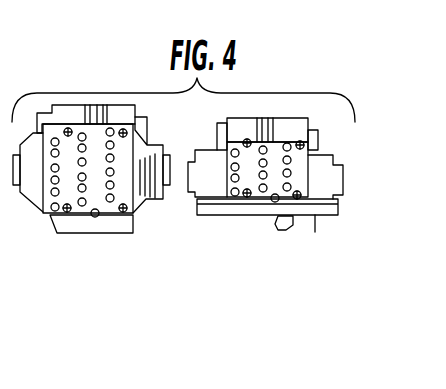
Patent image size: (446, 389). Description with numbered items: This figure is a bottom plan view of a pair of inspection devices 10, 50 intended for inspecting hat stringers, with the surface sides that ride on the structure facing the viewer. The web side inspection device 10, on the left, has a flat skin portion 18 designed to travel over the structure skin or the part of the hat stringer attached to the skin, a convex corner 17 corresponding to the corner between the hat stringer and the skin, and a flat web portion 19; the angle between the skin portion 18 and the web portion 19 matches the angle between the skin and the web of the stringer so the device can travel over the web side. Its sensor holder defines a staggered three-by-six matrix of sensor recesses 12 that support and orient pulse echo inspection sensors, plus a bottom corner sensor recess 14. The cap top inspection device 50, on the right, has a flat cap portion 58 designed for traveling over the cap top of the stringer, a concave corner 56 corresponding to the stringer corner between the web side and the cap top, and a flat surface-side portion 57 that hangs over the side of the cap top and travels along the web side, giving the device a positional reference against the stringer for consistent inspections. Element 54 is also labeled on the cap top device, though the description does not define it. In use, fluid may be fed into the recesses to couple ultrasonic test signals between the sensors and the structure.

The inspection device 10 is at (50, 80).
The sensor recesses 12 is at (37, 173).
The bottom corner sensor recess 14 is at (91, 222).
The convex corner 17 is at (133, 223).
The skin portion 18 is at (115, 240).
The web portion 19 is at (137, 117).
The inspection device 50 is at (280, 116).
The fastener 54 is at (273, 207).
The concave corner 56 is at (340, 198).
The surface-side portion 57 is at (312, 205).
The cap portion 58 is at (323, 178).